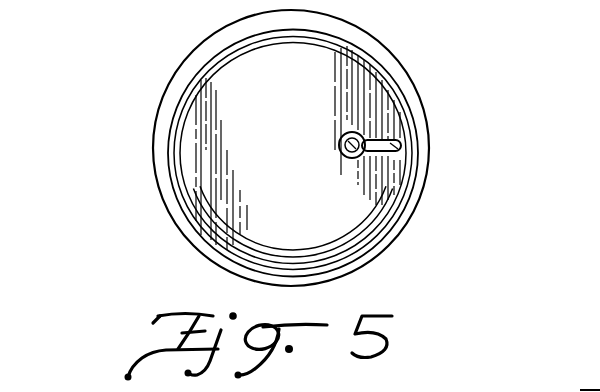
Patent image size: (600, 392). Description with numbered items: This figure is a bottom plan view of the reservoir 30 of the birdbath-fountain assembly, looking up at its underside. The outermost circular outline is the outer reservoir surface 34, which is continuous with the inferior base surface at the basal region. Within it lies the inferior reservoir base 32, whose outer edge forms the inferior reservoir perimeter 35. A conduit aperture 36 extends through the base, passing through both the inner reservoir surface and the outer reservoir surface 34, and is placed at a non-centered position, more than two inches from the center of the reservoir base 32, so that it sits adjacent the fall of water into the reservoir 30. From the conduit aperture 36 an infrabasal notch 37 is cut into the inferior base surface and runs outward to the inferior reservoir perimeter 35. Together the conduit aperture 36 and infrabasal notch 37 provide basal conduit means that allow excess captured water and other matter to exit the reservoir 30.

The reservoir 30 is at (431, 131).
The inferior reservoir base 32 is at (232, 148).
The outer reservoir surface 34 is at (236, 94).
The inferior reservoir perimeter 35 is at (368, 204).
The conduit aperture 36 is at (363, 131).
The infrabasal notch 37 is at (398, 150).